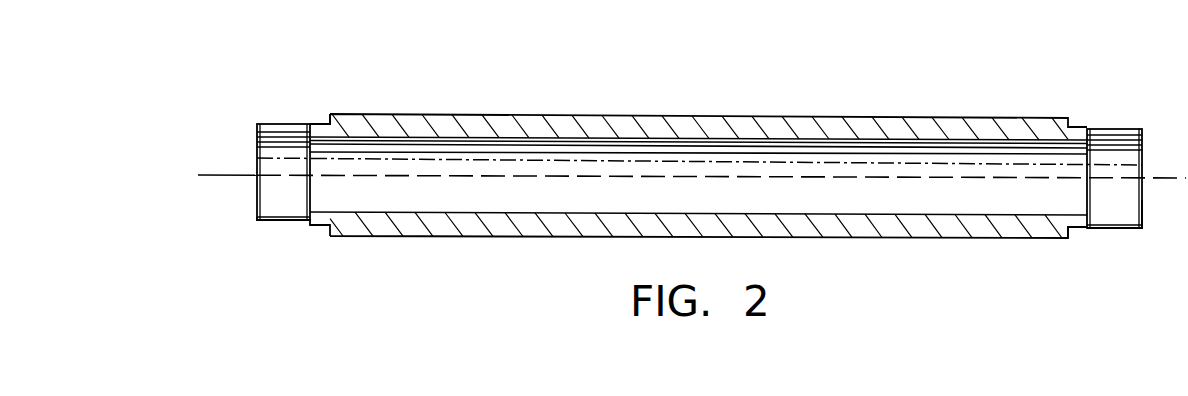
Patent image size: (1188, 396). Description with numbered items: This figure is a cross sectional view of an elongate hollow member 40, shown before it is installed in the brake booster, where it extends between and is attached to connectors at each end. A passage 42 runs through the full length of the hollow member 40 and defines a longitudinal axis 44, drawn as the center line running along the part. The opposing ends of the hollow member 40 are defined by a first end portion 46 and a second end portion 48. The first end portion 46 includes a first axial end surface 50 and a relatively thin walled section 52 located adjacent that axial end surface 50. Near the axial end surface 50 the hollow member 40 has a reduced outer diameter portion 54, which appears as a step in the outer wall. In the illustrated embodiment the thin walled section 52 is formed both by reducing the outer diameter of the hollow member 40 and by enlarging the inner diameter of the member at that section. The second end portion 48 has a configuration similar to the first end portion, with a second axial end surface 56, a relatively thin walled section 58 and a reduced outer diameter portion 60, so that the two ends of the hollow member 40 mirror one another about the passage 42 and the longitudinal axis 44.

The hollow member 40 is at (582, 115).
The passage 42 is at (443, 200).
The longitudinal axis 44 is at (205, 172).
The first end portion 46 is at (267, 116).
The second end portion 48 is at (1121, 120).
The first axial end surface 50 is at (257, 220).
The thin walled section 52 is at (285, 225).
The reduced outer diameter portion 54 is at (322, 123).
The second axial end surface 56 is at (1142, 228).
The thin walled section 58 is at (1110, 228).
The reduced outer diameter portion 60 is at (1073, 229).